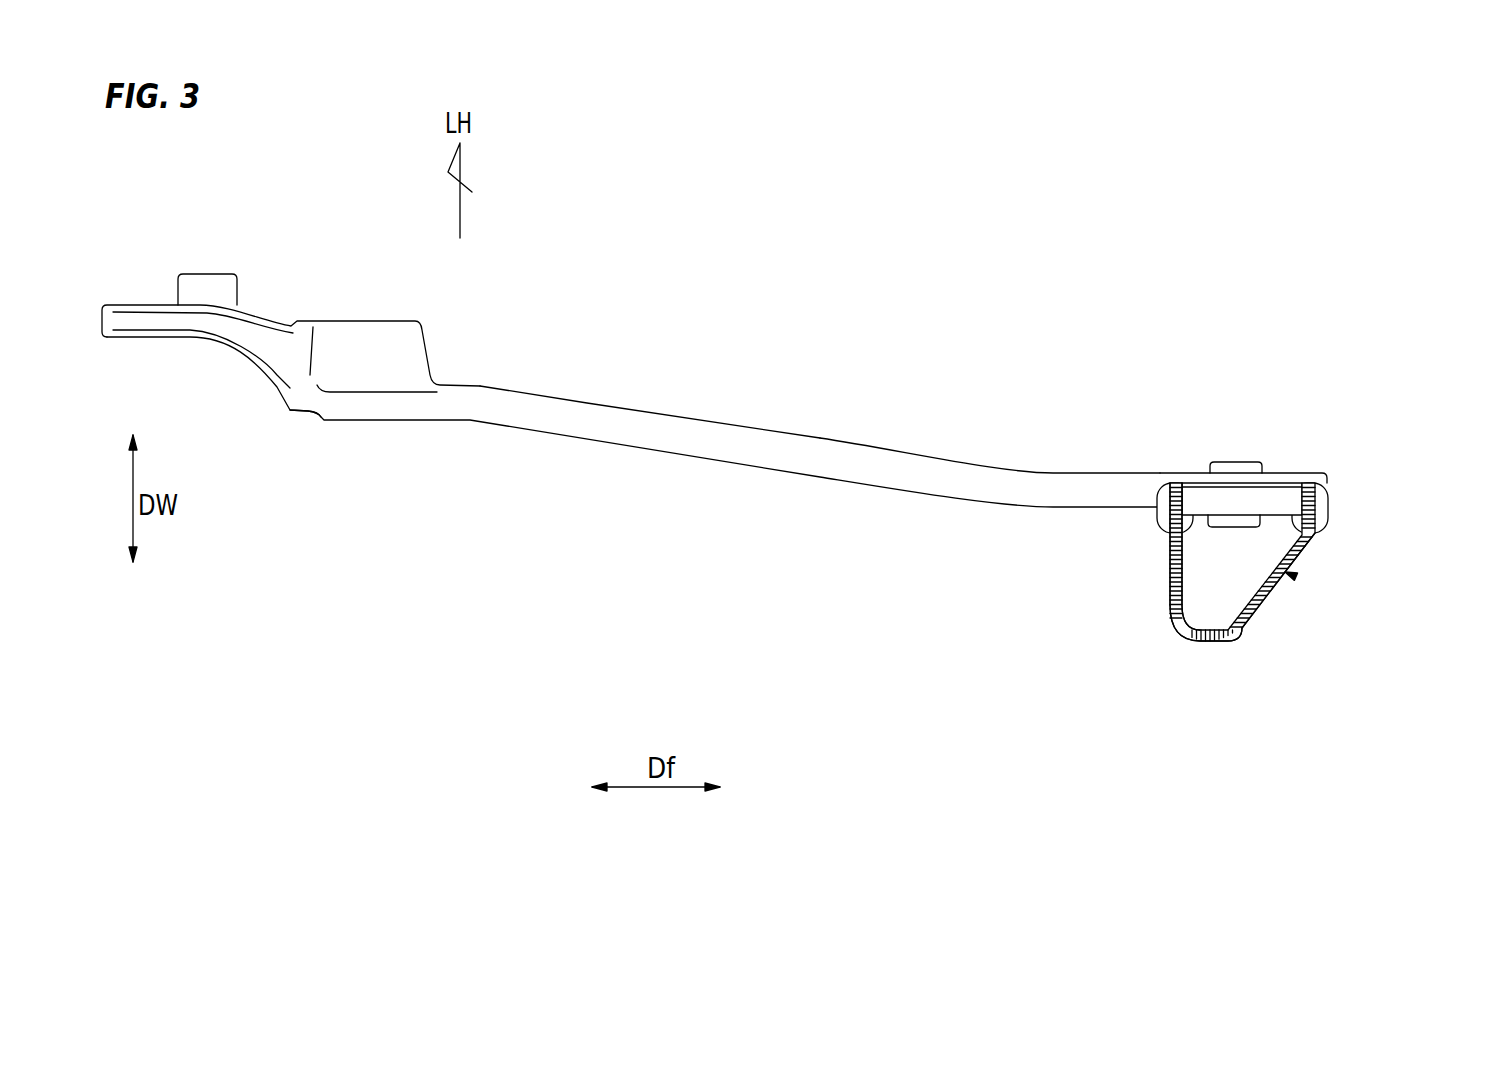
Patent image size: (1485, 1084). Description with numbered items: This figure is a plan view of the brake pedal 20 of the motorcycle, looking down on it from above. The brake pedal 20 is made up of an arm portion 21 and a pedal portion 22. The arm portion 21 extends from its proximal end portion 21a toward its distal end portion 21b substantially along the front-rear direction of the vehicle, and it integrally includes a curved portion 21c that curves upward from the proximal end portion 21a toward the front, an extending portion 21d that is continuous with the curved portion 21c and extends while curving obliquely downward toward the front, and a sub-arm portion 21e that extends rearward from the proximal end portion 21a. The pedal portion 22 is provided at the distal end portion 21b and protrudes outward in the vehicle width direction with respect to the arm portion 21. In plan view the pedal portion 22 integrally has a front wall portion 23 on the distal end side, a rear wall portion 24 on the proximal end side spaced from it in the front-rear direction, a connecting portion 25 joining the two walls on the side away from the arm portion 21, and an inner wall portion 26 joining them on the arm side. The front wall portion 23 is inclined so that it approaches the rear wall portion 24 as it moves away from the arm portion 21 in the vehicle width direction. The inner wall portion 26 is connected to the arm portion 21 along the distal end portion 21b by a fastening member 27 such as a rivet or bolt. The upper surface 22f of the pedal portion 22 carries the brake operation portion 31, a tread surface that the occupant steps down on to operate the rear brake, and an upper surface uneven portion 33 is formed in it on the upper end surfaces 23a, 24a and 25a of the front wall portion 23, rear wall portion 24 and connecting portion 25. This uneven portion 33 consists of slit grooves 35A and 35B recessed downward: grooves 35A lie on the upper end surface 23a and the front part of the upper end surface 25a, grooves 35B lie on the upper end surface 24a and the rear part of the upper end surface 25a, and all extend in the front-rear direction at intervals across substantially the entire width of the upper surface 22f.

The brake pedal 20 is at (790, 432).
The arm portion 21 is at (680, 452).
The proximal end portion 21a is at (343, 425).
The distal end portion 21b is at (1305, 477).
The curved portion 21c is at (592, 406).
The extending portion 21d is at (957, 466).
The sub-arm portion 21e is at (122, 305).
The pedal portion 22 is at (1210, 643).
The upper surface 22f is at (1217, 634).
The front wall portion 23 is at (1277, 588).
The upper end surface of the front wall portion 23a is at (1303, 540).
The rear wall portion 24 is at (1170, 573).
The upper end surface of the rear wall portion 24a is at (1172, 583).
The connecting portion 25 is at (1222, 643).
The upper end surface of the connecting portion 25a is at (1198, 640).
The inner wall portion 26 is at (1195, 478).
The fastening member 27 is at (1238, 462).
The brake operation portion 31 is at (1285, 572).
The upper surface uneven portion 33 is at (1228, 595).
The slit groove 35A is at (1303, 540).
The slit groove 35B is at (1177, 545).